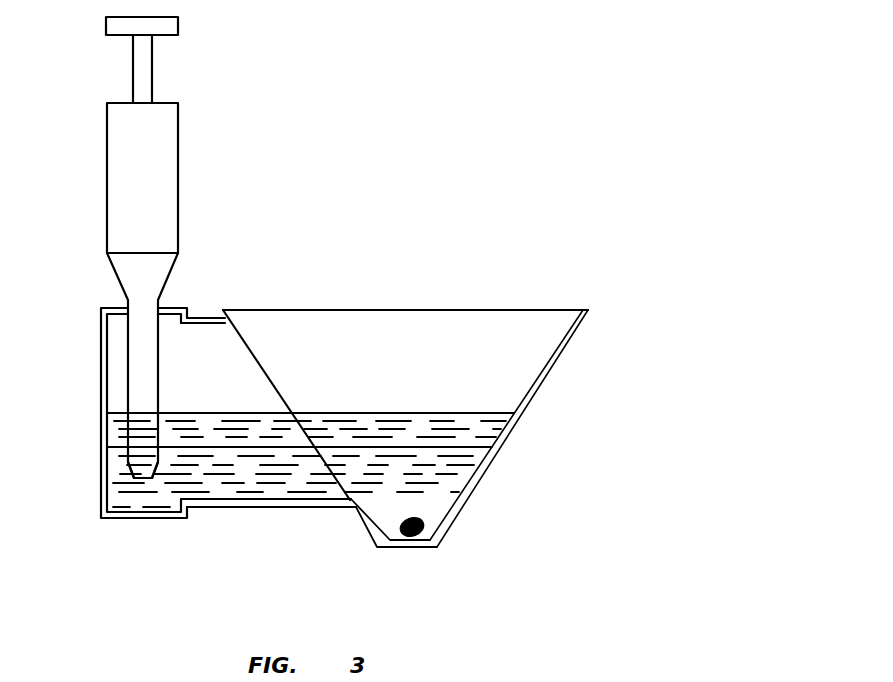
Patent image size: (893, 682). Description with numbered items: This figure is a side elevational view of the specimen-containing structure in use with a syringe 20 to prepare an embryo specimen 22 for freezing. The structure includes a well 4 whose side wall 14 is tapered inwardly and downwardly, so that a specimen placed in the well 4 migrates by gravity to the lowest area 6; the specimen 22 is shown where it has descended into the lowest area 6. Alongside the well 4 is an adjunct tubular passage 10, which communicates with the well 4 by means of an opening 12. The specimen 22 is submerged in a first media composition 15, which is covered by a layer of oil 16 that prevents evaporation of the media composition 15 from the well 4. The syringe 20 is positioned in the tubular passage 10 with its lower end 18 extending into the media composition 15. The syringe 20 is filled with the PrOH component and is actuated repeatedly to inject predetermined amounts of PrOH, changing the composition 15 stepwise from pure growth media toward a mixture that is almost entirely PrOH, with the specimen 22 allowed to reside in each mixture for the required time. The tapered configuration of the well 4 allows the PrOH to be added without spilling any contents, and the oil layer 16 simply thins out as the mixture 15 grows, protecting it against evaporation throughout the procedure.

The syringe 20 is at (157, 193).
The tubular passage 10 is at (100, 378).
The opening 12 is at (207, 313).
The well 4 is at (388, 321).
The side wall 14 is at (489, 449).
The lowest area 6 is at (431, 548).
The layer of oil 16 is at (492, 424).
The media composition 15 is at (443, 482).
The lower end 18 is at (131, 465).
The specimen 22 is at (410, 540).